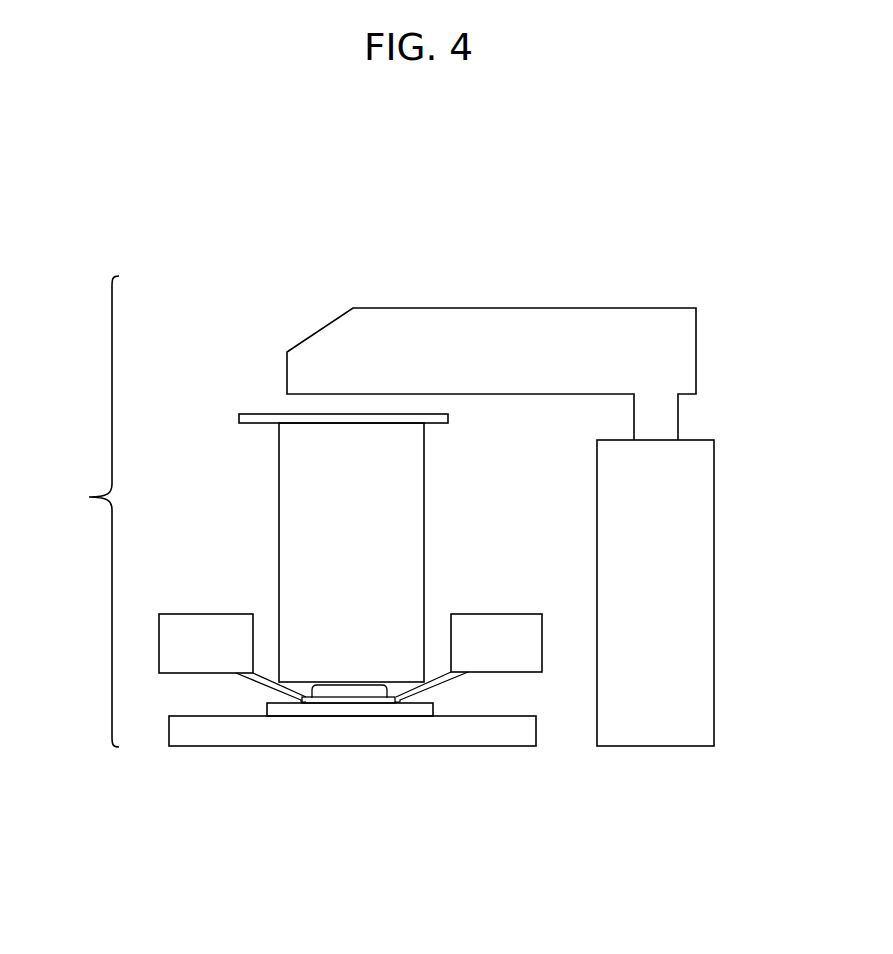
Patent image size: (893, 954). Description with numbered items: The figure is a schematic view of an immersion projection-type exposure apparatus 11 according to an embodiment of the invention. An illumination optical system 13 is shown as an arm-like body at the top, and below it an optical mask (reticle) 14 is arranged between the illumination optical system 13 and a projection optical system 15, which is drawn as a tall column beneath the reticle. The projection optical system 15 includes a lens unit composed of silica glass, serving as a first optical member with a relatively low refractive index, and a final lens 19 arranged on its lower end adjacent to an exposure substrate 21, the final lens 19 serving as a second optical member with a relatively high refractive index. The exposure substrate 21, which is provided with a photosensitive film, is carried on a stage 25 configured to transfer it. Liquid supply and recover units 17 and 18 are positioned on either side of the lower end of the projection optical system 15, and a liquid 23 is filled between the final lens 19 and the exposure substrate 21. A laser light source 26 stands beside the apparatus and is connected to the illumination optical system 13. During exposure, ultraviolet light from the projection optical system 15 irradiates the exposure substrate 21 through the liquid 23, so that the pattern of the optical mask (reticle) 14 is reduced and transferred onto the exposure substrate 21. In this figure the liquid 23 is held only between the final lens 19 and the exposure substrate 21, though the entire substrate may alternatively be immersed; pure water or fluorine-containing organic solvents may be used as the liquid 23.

The immersion projection-type exposure apparatus 11 is at (87, 511).
The illumination optical system 13 is at (323, 328).
The optical mask (reticle) 14 is at (448, 418).
The projection optical system 15 is at (322, 545).
The liquid supply and recover unit 17 is at (217, 628).
The liquid supply and recover unit 18 is at (483, 627).
The final lens 19 is at (342, 690).
The exposure substrate 21 is at (433, 707).
The liquid 23 is at (363, 700).
The stage 25 is at (500, 738).
The laser light source 26 is at (647, 733).